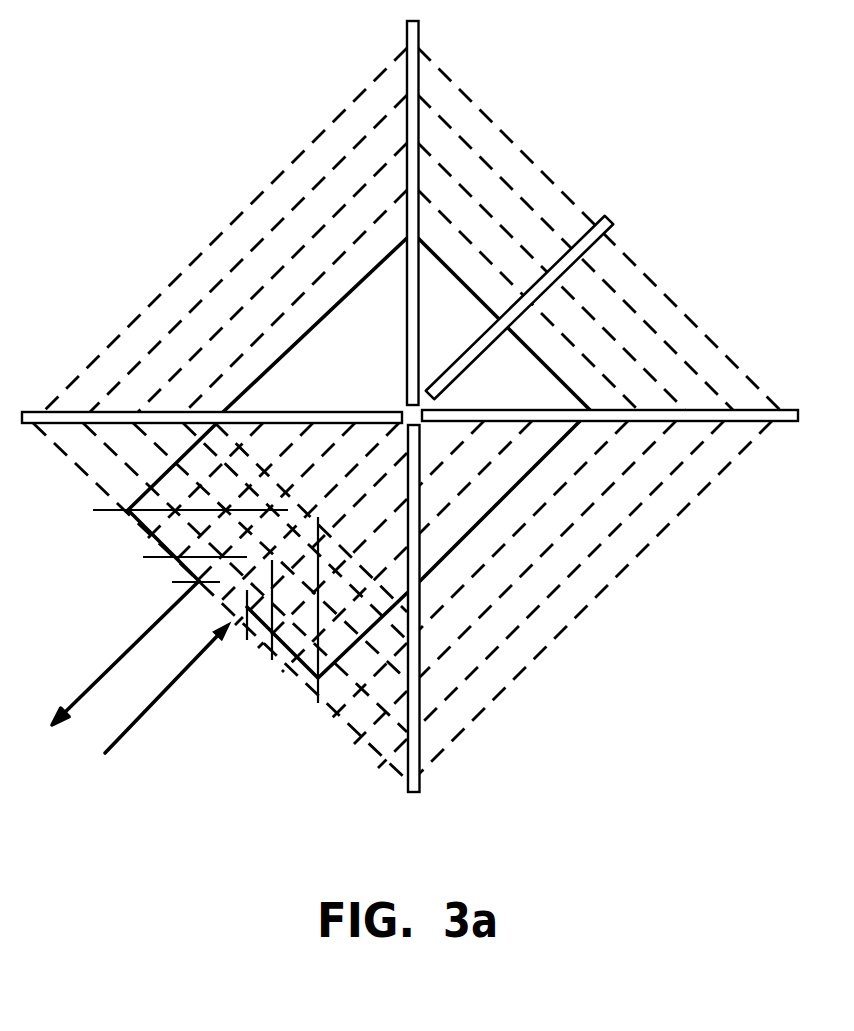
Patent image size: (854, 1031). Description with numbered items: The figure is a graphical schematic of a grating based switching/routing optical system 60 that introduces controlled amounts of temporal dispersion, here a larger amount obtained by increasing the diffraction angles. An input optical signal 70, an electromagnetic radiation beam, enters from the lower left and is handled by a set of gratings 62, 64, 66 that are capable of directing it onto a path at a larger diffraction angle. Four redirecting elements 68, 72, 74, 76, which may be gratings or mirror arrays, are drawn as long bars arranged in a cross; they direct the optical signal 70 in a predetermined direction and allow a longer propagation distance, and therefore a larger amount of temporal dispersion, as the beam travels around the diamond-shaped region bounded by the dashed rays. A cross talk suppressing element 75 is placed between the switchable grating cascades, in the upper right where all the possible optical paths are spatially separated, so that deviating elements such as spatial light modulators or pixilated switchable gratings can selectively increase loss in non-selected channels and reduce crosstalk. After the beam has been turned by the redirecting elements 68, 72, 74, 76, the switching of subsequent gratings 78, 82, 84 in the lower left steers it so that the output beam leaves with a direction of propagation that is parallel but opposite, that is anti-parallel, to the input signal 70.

The system 60 is at (105, 59).
The grating 62 is at (248, 590).
The grating 64 is at (271, 648).
The grating 66 is at (318, 688).
The redirecting element 68 is at (406, 782).
The input optical signal 70 is at (133, 724).
The redirecting element 72 is at (757, 407).
The redirecting element 74 is at (419, 37).
The cross talk suppressing element 75 is at (597, 252).
The redirecting element 76 is at (70, 408).
The grating 78 is at (97, 509).
The grating 82 is at (153, 559).
The grating 84 is at (206, 583).